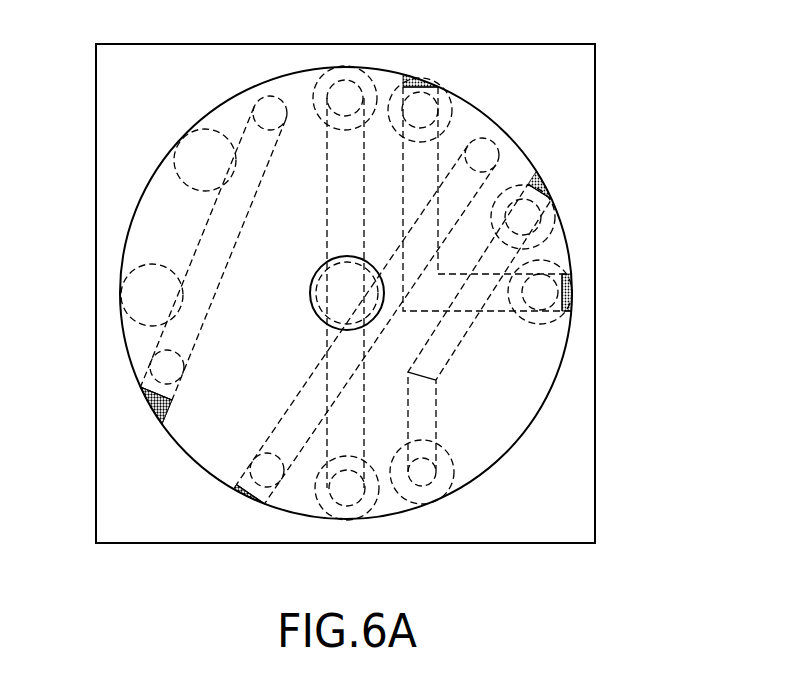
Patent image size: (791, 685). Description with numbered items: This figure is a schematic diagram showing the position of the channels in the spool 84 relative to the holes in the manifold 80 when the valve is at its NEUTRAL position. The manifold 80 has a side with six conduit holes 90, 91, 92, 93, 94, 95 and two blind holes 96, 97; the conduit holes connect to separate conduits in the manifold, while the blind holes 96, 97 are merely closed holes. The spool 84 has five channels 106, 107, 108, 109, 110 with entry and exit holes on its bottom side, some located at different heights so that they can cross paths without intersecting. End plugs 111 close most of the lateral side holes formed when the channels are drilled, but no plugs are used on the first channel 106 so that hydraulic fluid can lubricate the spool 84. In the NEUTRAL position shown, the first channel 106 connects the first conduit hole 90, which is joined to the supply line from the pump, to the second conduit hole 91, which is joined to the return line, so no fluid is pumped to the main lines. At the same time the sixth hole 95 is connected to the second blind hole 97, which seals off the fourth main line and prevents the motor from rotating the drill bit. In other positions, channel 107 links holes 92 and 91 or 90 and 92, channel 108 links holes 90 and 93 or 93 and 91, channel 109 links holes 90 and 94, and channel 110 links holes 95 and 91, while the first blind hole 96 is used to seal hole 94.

The manifold 80 is at (597, 518).
The spool 84 is at (537, 419).
The first conduit hole 90 is at (345, 518).
The second conduit hole 91 is at (343, 92).
The third conduit hole 92 is at (125, 293).
The fourth conduit hole 93 is at (545, 288).
The fifth conduit hole 94 is at (420, 105).
The sixth conduit hole 95 is at (537, 212).
The first blind hole 96 is at (193, 141).
The second blind hole 97 is at (455, 467).
The first channel 106 is at (327, 137).
The second channel 107 is at (195, 241).
The third channel 108 is at (457, 345).
The fourth channel 109 is at (277, 423).
The fifth channel 110 is at (500, 313).
The end plugs 111 is at (147, 405).